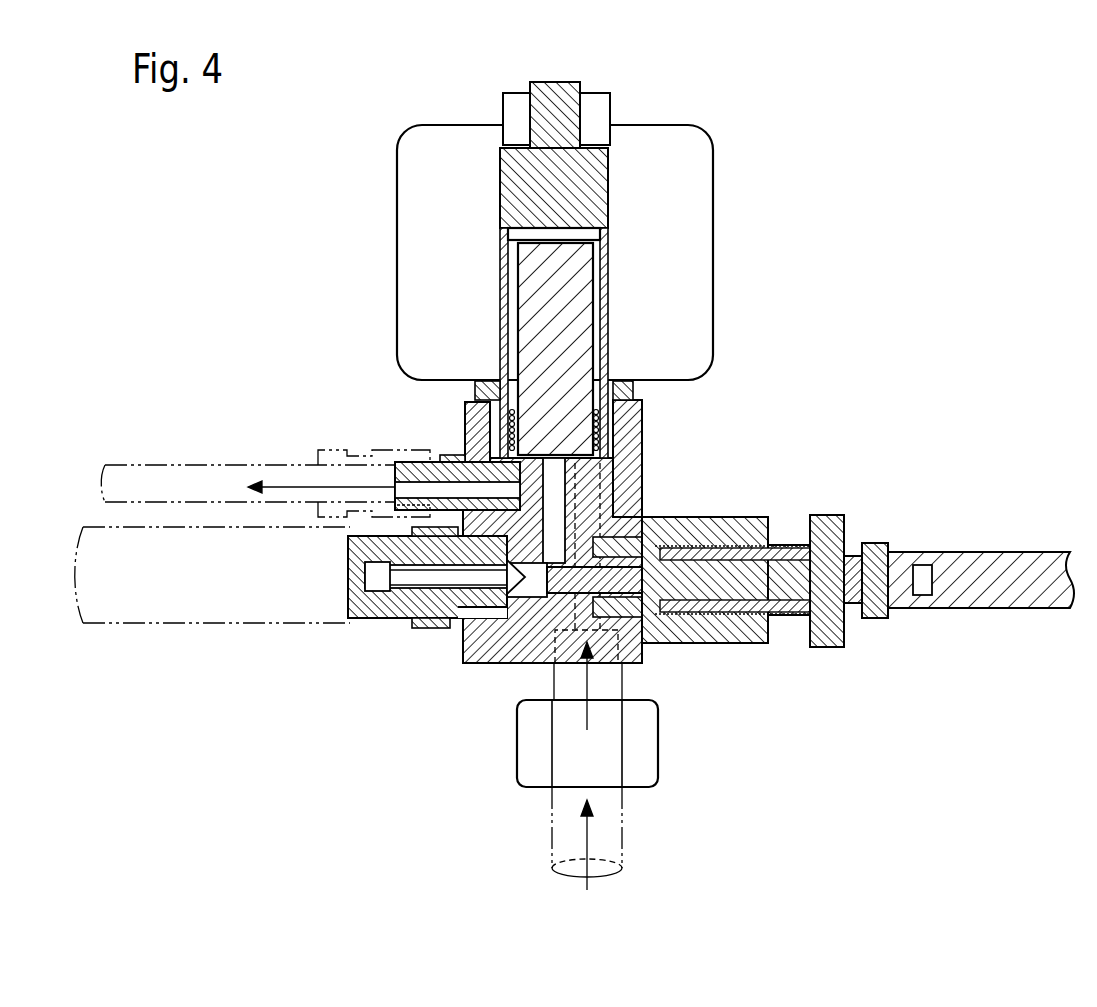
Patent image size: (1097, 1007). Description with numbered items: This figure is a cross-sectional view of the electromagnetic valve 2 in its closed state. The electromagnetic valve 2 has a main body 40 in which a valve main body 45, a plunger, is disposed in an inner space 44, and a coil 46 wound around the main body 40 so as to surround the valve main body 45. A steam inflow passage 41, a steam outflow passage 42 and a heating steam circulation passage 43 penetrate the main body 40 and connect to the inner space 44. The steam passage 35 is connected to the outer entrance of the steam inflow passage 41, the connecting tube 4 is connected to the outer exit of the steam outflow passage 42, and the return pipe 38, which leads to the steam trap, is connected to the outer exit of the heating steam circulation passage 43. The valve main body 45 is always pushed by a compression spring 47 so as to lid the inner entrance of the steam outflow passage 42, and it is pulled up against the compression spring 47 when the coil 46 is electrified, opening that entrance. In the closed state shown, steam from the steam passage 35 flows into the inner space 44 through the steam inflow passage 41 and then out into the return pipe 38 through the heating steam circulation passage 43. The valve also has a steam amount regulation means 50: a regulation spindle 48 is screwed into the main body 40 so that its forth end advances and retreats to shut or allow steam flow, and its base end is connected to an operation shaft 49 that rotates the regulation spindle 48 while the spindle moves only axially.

The electromagnetic valve 2 is at (543, 253).
The connecting tube 4 is at (195, 625).
The steam passage 35 is at (552, 810).
The return pipe 38 is at (205, 462).
The main body 40 is at (650, 483).
The steam inflow passage 41 is at (645, 470).
The steam outflow passage 42 is at (555, 507).
The heating steam circulation passage 43 is at (470, 445).
The inner space 44 is at (610, 233).
The valve main body 45 is at (580, 288).
The coil 46 is at (440, 152).
The compression spring 47 is at (460, 412).
The regulation spindle 48 is at (688, 640).
The operation shaft 49 is at (960, 552).
The steam amount regulation means 50 is at (850, 506).